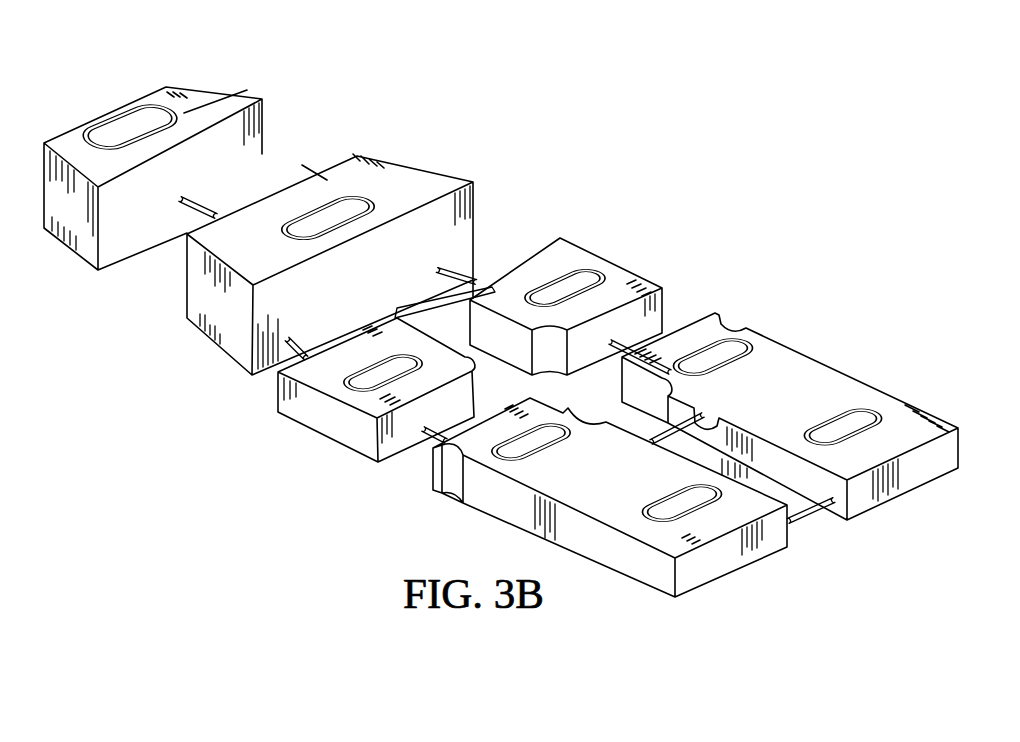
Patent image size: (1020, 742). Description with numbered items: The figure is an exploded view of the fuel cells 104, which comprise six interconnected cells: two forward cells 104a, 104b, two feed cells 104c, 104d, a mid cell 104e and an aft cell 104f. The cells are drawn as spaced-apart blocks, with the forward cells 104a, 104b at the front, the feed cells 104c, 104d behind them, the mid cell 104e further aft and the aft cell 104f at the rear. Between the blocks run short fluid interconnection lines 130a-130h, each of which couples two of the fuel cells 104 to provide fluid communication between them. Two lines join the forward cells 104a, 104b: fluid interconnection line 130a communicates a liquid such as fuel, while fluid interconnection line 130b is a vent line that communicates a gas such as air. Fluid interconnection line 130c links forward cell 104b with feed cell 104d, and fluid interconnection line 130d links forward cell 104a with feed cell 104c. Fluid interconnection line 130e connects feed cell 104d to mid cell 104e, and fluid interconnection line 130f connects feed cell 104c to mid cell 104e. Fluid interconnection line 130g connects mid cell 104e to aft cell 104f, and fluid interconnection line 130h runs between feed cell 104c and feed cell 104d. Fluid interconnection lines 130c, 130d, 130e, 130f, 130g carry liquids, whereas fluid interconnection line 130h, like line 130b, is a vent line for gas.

The fuel cells 104 is at (801, 344).
The forward cell 104a is at (717, 568).
The forward cell 104b is at (867, 393).
The feed cell 104c is at (330, 432).
The feed cell 104d is at (598, 268).
The mid cell 104e is at (402, 173).
The aft cell 104f is at (233, 102).
The fluid interconnection line 130a is at (815, 513).
The fluid interconnection line 130b is at (720, 421).
The fluid interconnection line 130c is at (623, 340).
The fluid interconnection line 130d is at (427, 436).
The fluid interconnection line 130e is at (450, 267).
The fluid interconnection line 130f is at (299, 342).
The fluid interconnection line 130g is at (193, 205).
The fluid interconnection line 130h is at (425, 312).